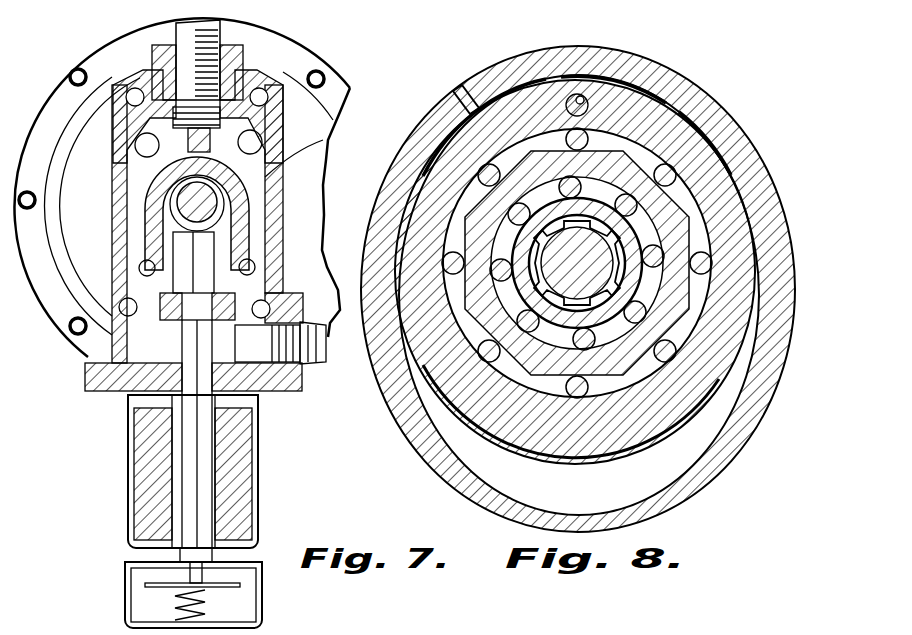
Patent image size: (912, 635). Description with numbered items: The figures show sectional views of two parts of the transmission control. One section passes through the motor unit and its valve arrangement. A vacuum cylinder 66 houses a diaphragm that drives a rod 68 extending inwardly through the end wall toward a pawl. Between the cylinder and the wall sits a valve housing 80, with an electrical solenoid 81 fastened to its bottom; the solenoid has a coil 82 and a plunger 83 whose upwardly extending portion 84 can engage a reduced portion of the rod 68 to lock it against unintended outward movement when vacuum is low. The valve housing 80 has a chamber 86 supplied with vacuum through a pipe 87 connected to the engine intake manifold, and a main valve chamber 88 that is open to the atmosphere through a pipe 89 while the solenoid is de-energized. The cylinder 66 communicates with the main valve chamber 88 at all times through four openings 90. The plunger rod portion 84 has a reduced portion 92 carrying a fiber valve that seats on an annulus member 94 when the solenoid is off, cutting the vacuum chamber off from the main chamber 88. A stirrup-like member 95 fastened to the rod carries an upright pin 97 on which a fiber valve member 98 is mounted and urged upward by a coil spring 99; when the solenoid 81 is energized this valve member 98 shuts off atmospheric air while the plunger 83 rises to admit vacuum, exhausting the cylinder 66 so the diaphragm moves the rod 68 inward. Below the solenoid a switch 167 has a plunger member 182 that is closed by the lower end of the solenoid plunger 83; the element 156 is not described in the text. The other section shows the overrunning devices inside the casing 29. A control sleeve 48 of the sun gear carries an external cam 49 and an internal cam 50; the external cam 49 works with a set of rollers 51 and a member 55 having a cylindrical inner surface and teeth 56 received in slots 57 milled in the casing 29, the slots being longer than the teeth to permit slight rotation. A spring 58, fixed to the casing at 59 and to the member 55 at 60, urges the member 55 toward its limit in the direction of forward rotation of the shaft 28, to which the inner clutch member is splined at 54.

In FIG. 7, the vacuum cylinder 66 is at (318, 62).
In FIG. 7, the valve housing 80 is at (322, 160).
In FIG. 7, the main valve chamber 88 is at (132, 171).
In FIG. 7, the openings 90 is at (263, 145).
In FIG. 7, the pipe 89 is at (180, 34).
In FIG. 7, the valve member 98 is at (232, 72).
In FIG. 7, the coil spring 99 is at (220, 128).
In FIG. 7, the upright pin 97 is at (187, 141).
In FIG. 7, the stirrup-like member 95 is at (150, 201).
In FIG. 7, the rod 68 is at (217, 203).
In FIG. 7, the upwardly extending portion 84 is at (193, 262).
In FIG. 7, the reduced portion 92 is at (197, 296).
In FIG. 7, the plunger 83 is at (205, 506).
In FIG. 7, the annulus member 94 is at (267, 343).
In FIG. 7, the pipe 87 is at (318, 372).
In FIG. 7, the chamber 86 is at (130, 352).
In FIG. 7, the electrical solenoid 81 is at (258, 424).
In FIG. 7, the coil 82 is at (240, 467).
In FIG. 7, the switch 167 is at (262, 601).
In FIG. 7, the plunger member 182 is at (145, 585).
In FIG. 7, the connection 156 is at (318, 627).
In FIG. 8, the casing 29 is at (712, 470).
In FIG. 8, the control sleeve 48 is at (640, 152).
In FIG. 8, the slots 57 is at (560, 76).
In FIG. 8, the teeth 56 is at (592, 77).
In FIG. 8, the spring 58 is at (645, 90).
In FIG. 8, the fixing point 59 is at (461, 90).
In FIG. 8, the fixing point 60 is at (574, 116).
In FIG. 8, the external cam 49 is at (690, 192).
In FIG. 8, the internal cam 50 is at (668, 233).
In FIG. 8, the rollers 51 is at (690, 265).
In FIG. 8, the member 55 is at (512, 245).
In FIG. 8, the shaft 28 is at (540, 298).
In FIG. 8, the spline 54 is at (615, 318).